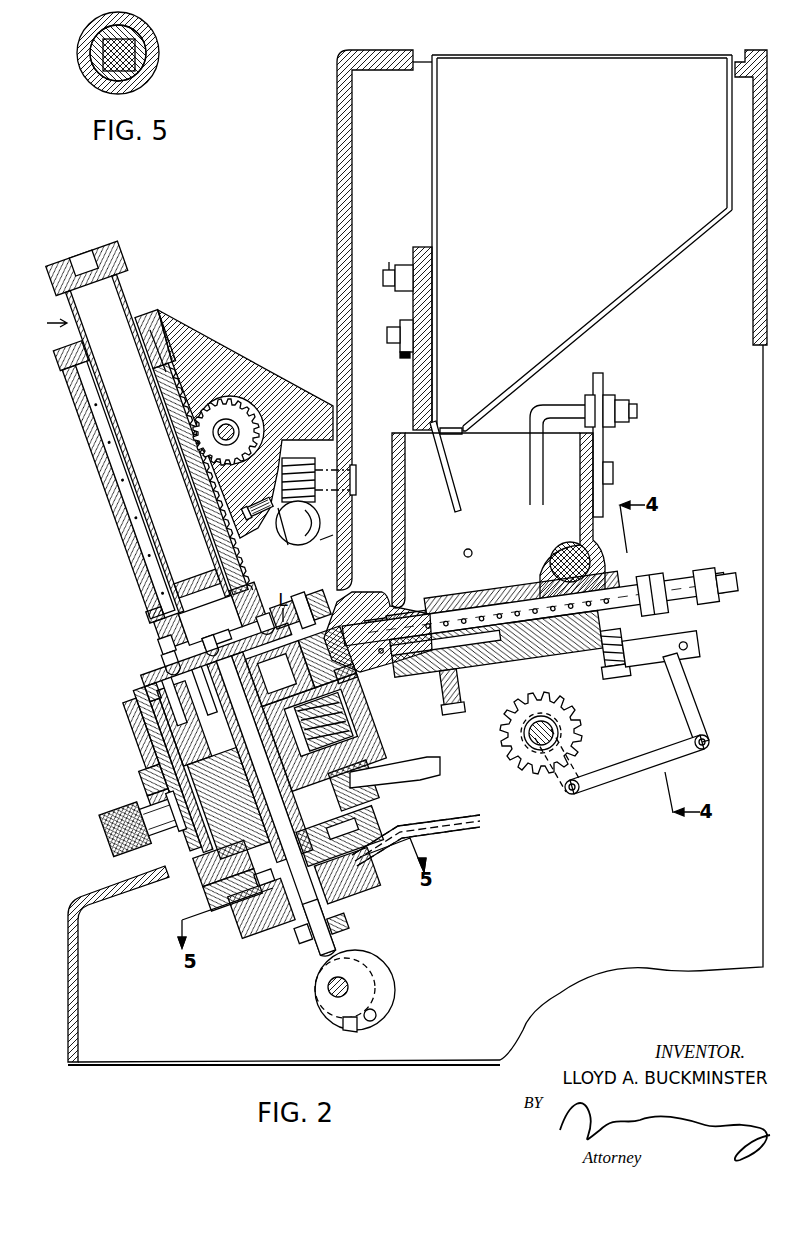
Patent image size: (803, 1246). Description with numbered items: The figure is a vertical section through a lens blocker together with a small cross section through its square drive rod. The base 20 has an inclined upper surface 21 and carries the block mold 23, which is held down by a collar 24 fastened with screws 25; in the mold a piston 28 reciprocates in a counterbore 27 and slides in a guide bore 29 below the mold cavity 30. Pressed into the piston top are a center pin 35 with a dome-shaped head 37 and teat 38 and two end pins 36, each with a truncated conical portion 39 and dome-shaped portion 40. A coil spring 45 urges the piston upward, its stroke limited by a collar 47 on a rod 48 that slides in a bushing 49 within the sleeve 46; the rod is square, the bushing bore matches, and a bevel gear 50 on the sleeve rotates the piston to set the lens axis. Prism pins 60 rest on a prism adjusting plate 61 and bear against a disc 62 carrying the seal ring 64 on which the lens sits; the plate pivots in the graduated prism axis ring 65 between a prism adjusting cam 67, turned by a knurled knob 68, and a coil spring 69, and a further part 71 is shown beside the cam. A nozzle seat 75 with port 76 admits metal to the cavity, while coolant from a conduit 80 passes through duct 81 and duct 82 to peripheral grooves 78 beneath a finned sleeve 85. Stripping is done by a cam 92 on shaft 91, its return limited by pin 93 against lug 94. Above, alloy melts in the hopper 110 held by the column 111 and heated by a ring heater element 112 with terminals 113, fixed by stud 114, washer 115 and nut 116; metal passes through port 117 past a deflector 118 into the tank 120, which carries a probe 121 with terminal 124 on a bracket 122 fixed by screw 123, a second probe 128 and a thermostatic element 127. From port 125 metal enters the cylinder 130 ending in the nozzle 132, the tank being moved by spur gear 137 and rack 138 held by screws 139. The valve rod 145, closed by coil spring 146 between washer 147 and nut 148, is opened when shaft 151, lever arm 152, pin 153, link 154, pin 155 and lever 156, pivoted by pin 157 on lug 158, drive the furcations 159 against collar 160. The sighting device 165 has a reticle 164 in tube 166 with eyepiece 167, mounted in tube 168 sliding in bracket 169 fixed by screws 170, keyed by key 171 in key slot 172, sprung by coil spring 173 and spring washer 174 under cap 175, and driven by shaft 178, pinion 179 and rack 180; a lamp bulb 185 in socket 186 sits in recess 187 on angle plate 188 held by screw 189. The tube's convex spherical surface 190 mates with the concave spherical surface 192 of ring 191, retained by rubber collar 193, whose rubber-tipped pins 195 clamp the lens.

In FIG. 2, the base 20 is at (443, 1062).
In FIG. 2, the upper surface of the base 21 is at (366, 750).
In FIG. 2, the block mold 23 is at (214, 855).
In FIG. 2, the collar 24 is at (228, 875).
In FIG. 2, the screws 25 is at (258, 890).
In FIG. 2, the counterbore 27 is at (172, 748).
In FIG. 2, the piston 28 is at (166, 732).
In FIG. 2, the guide bore 29 is at (248, 780).
In FIG. 2, the mold cavity 30 is at (320, 640).
In FIG. 2, the center pin 35 is at (258, 704).
In FIG. 2, the end pins 36 is at (332, 682).
In FIG. 2, the dome-shaped head 37 is at (238, 672).
In FIG. 2, the teat 38 is at (206, 690).
In FIG. 2, the truncated conical portion 39 is at (262, 632).
In FIG. 2, the dome-shaped portion 40 is at (208, 648).
In FIG. 2, the coil spring 45 is at (350, 800).
In FIG. 5, the sleeve 46 is at (153, 68).
In FIG. 2, the sleeve 46 is at (332, 905).
In FIG. 2, the collar 47 is at (312, 944).
In FIG. 5, the rod 48 is at (130, 53).
In FIG. 2, the rod 48 is at (335, 926).
In FIG. 5, the bushing 49 is at (93, 66).
In FIG. 2, the bushing 49 is at (303, 932).
In FIG. 2, the bevel gear 50 is at (250, 921).
In FIG. 2, the prism pins 60 is at (170, 772).
In FIG. 2, the prism adjusting plate 61 is at (172, 788).
In FIG. 2, the disc 62 is at (152, 690).
In FIG. 2, the seal ring 64 is at (152, 676).
In FIG. 2, the graduated prism axis ring 65 is at (355, 722).
In FIG. 2, the prism adjusting cam 67 is at (160, 842).
In FIG. 2, the knurled knob 68 is at (115, 838).
In FIG. 2, the coil spring 69 is at (362, 737).
In FIG. 2, the bracket 71 is at (185, 840).
In FIG. 2, the nozzle seat 75 is at (346, 652).
In FIG. 2, the port 76 is at (326, 652).
In FIG. 2, the peripheral grooves 78 is at (332, 696).
In FIG. 2, the conduit 80 is at (462, 815).
In FIG. 2, the duct 81 is at (346, 853).
In FIG. 2, the duct 82 is at (358, 784).
In FIG. 2, the finned sleeve 85 is at (150, 714).
In FIG. 2, the shaft 91 is at (326, 990).
In FIG. 2, the cam 92 is at (380, 980).
In FIG. 2, the pin 93 is at (375, 1020).
In FIG. 2, the lug 94 is at (345, 1030).
In FIG. 2, the hopper 110 is at (432, 165).
In FIG. 2, the column 111 is at (345, 160).
In FIG. 2, the ring heater element 112 is at (413, 400).
In FIG. 2, the terminals 113 is at (383, 274).
In FIG. 2, the stud 114 is at (390, 340).
In FIG. 2, the washer 115 is at (403, 358).
In FIG. 2, the nut 116 is at (400, 326).
In FIG. 2, the port 117 is at (455, 434).
In FIG. 2, the deflector 118 is at (446, 480).
In FIG. 2, the tank 120 is at (392, 560).
In FIG. 2, the probe 121 is at (562, 405).
In FIG. 2, the bracket 122 is at (603, 455).
In FIG. 2, the screw 123 is at (613, 474).
In FIG. 2, the terminal 124 is at (636, 404).
In FIG. 2, the port 125 is at (377, 629).
In FIG. 2, the thermostatic element 127 is at (552, 555).
In FIG. 2, the second probe 128 is at (469, 549).
In FIG. 2, the cylinder 130 is at (407, 619).
In FIG. 2, the nozzle 132 is at (366, 630).
In FIG. 2, the spur gear 137 is at (580, 721).
In FIG. 2, the rack 138 is at (450, 691).
In FIG. 2, the screws 139 is at (613, 653).
In FIG. 2, the valve rod 145 is at (493, 626).
In FIG. 2, the coil spring 146 is at (521, 592).
In FIG. 2, the washer 147 is at (496, 643).
In FIG. 2, the nut 148 is at (534, 609).
In FIG. 2, the shaft 151 is at (524, 740).
In FIG. 2, the lever arm 152 is at (553, 775).
In FIG. 2, the pin 153 is at (572, 792).
In FIG. 2, the link 154 is at (637, 764).
In FIG. 2, the pin 155 is at (706, 746).
In FIG. 2, the lever 156 is at (686, 698).
In FIG. 2, the pin 157 is at (683, 645).
In FIG. 2, the lug 158 is at (661, 649).
In FIG. 2, the furcations 159 is at (652, 594).
In FIG. 2, the collar 160 is at (716, 585).
In FIG. 2, the reticle 164 is at (190, 575).
In FIG. 2, the sighting device 165 is at (36, 322).
In FIG. 2, the tube 166 is at (118, 292).
In FIG. 2, the eyepiece 167 is at (100, 244).
In FIG. 2, the tube 168 is at (145, 585).
In FIG. 2, the bracket 169 is at (214, 356).
In FIG. 2, the screws 170 is at (356, 480).
In FIG. 2, the key 171 is at (200, 348).
In FIG. 2, the key slot 172 is at (170, 355).
In FIG. 2, the coil spring 173 is at (128, 497).
In FIG. 2, the spring washer 174 is at (88, 425).
In FIG. 2, the cap 175 is at (156, 315).
In FIG. 2, the shaft 178 is at (232, 428).
In FIG. 2, the pinion 179 is at (238, 396).
In FIG. 2, the rack 180 is at (200, 478).
In FIG. 2, the lamp bulb 185 is at (300, 545).
In FIG. 2, the socket 186 is at (300, 460).
In FIG. 2, the recess 187 is at (322, 546).
In FIG. 2, the angle plate 188 is at (282, 535).
In FIG. 2, the screw 189 is at (258, 514).
In FIG. 2, the convex spherical surface 190 is at (158, 634).
In FIG. 2, the ring 191 is at (245, 600).
In FIG. 2, the concave spherical surface 192 is at (180, 633).
In FIG. 2, the rubber collar 193 is at (150, 612).
In FIG. 2, the rubber-tipped pins 195 is at (160, 655).